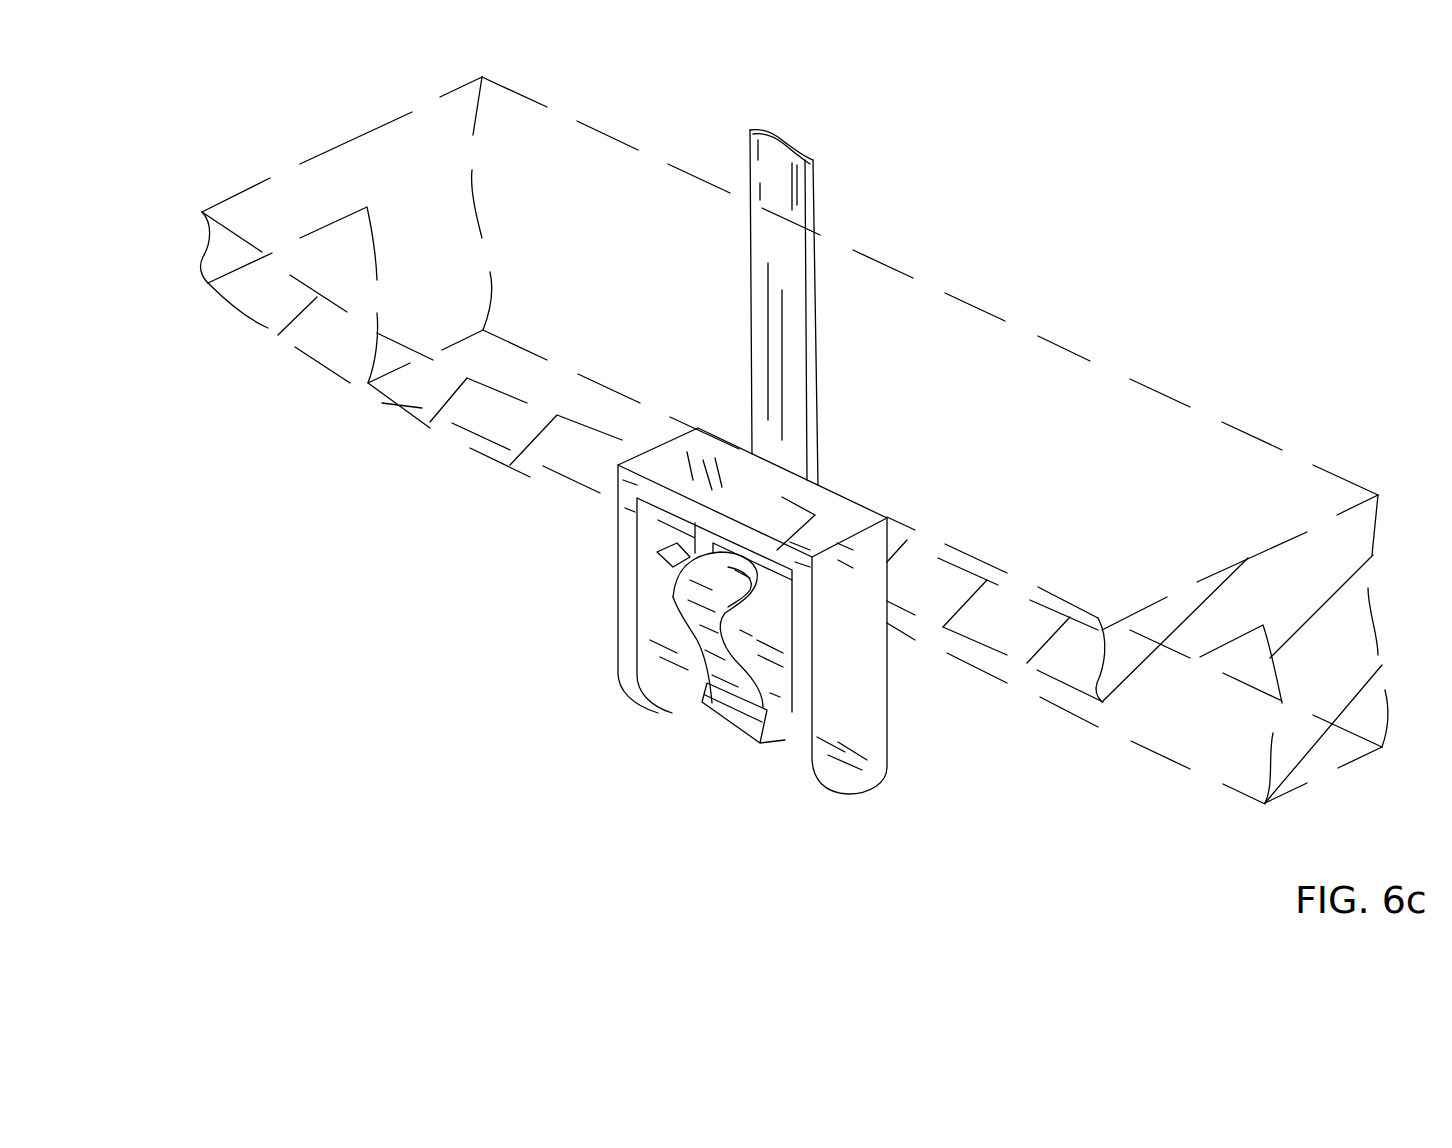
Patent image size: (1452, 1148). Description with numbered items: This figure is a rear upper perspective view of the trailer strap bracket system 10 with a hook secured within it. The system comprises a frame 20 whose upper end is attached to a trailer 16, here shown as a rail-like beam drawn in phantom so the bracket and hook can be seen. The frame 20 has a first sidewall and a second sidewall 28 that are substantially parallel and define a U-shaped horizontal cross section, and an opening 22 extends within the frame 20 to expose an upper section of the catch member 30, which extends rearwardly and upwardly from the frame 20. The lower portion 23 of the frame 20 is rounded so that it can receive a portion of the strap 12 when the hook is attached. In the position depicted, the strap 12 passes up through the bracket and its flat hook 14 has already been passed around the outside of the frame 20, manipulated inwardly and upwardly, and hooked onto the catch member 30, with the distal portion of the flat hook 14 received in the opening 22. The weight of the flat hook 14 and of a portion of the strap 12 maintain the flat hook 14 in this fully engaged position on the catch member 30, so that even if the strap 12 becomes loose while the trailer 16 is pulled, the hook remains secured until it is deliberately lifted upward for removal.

The trailer strap bracket system 10 is at (581, 511).
The strap 12 is at (815, 180).
The flat hook 14 is at (680, 603).
The trailer 16 is at (1222, 448).
The frame 20 is at (744, 645).
The opening 22 is at (692, 550).
The lower portion 23 is at (783, 740).
The second sidewall 28 is at (887, 757).
The catch member 30 is at (680, 553).